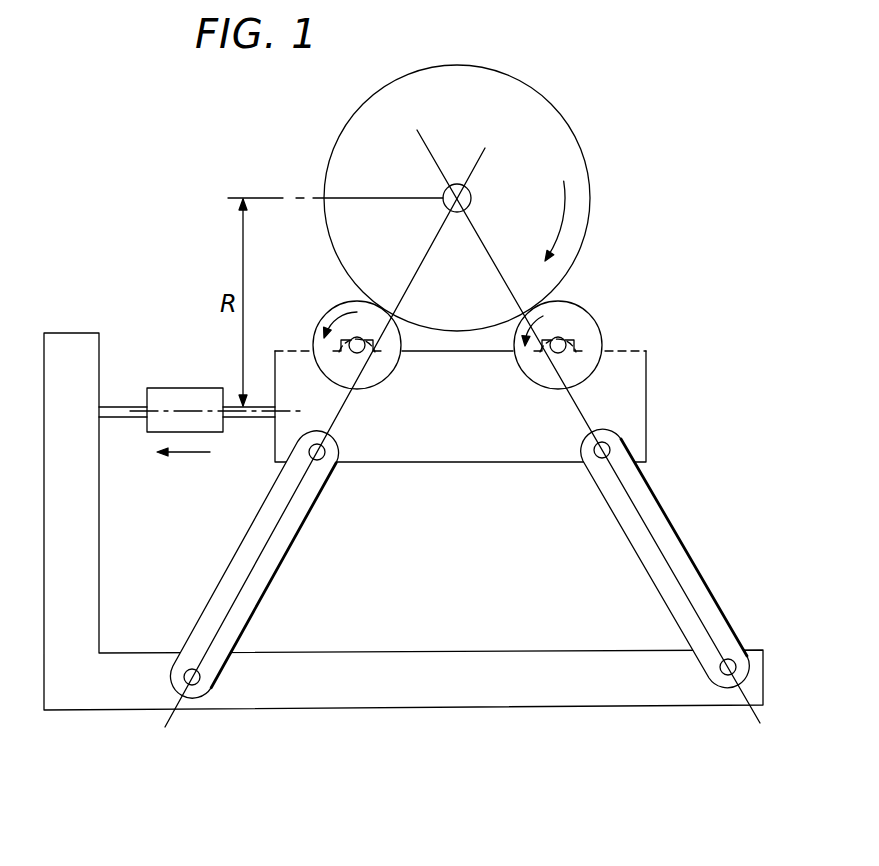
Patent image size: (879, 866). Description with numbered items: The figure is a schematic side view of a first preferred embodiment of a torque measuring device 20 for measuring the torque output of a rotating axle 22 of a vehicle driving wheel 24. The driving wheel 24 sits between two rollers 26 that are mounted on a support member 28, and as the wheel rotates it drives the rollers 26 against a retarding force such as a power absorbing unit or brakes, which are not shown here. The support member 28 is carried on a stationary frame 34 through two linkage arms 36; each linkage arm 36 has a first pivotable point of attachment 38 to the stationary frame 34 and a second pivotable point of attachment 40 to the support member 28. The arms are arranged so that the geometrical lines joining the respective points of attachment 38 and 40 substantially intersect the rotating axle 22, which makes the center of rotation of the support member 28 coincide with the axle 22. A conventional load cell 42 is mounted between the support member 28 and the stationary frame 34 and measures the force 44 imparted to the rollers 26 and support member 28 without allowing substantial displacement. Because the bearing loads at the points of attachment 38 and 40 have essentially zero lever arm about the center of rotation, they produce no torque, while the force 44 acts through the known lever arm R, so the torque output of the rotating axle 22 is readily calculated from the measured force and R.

The torque measuring device 20 is at (655, 418).
The rotating axle 22 is at (471, 198).
The driving wheel 24 is at (558, 110).
The rollers 26 is at (377, 378).
The support member 28 is at (637, 372).
The stationary frame 34 is at (413, 697).
The linkage arms 36 is at (260, 582).
The first pivotable point of attachment 38 is at (201, 678).
The second pivotable point of attachment 40 is at (325, 460).
The load cell 42 is at (177, 388).
The force 44 is at (180, 457).